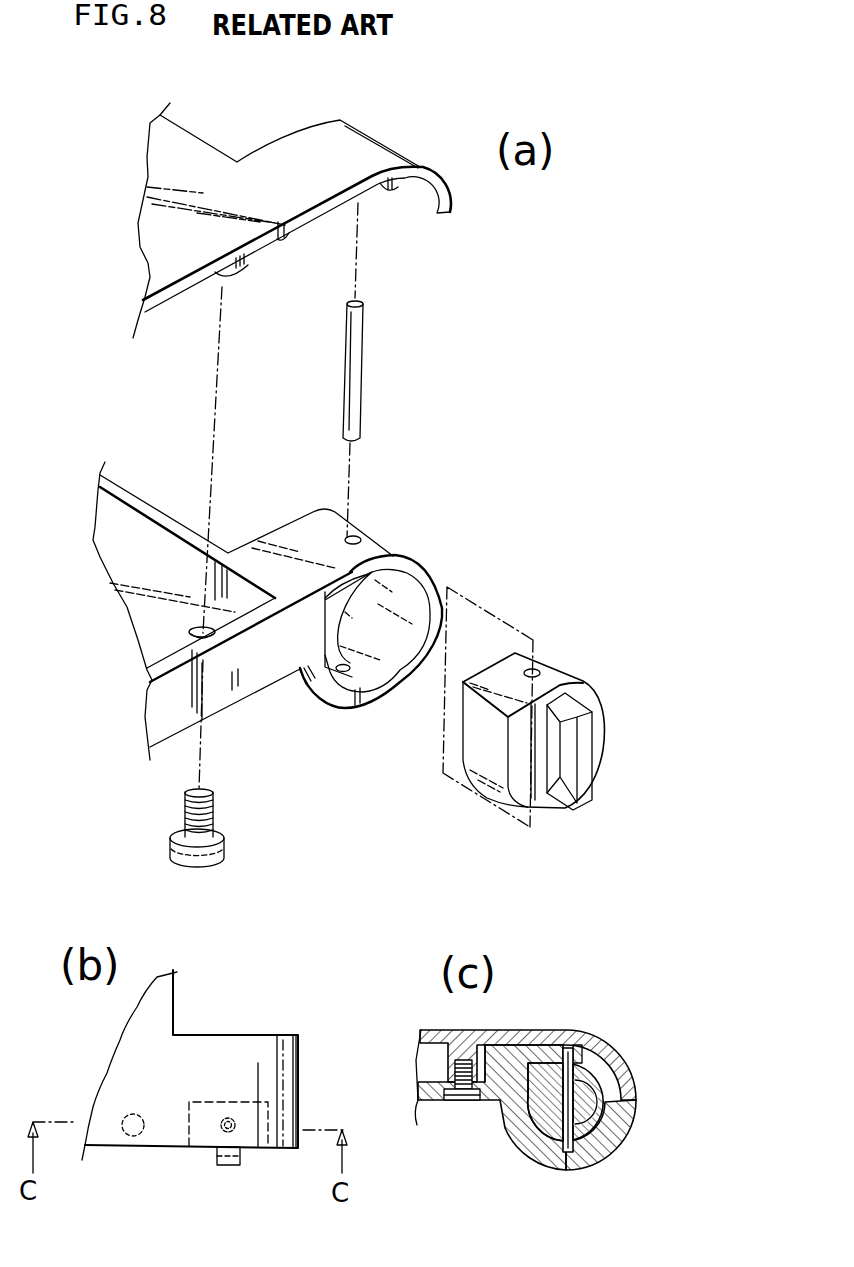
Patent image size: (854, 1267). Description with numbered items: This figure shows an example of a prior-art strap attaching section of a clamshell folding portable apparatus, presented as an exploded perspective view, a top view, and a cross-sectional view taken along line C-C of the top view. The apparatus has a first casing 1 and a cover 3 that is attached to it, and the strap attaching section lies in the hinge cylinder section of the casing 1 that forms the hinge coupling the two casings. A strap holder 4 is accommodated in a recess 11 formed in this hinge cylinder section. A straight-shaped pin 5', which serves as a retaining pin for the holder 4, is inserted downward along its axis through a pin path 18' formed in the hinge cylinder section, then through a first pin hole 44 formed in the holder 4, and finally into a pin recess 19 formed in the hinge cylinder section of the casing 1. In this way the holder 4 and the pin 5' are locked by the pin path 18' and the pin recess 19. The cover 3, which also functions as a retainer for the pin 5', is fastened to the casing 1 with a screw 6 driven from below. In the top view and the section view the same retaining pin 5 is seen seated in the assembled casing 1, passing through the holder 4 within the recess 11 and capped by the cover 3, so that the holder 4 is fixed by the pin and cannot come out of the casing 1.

The first casing 1 is at (225, 687).
The cover 3 is at (347, 143).
The strap holder 4 is at (493, 763).
The pin 5 is at (437, 1100).
The straight-shaped pin 5' is at (378, 371).
The screw 6 is at (225, 843).
The recess 11 is at (389, 657).
The pin path 18' is at (461, 761).
The pin recess 19 is at (378, 695).
The first pin hole 44 is at (540, 668).